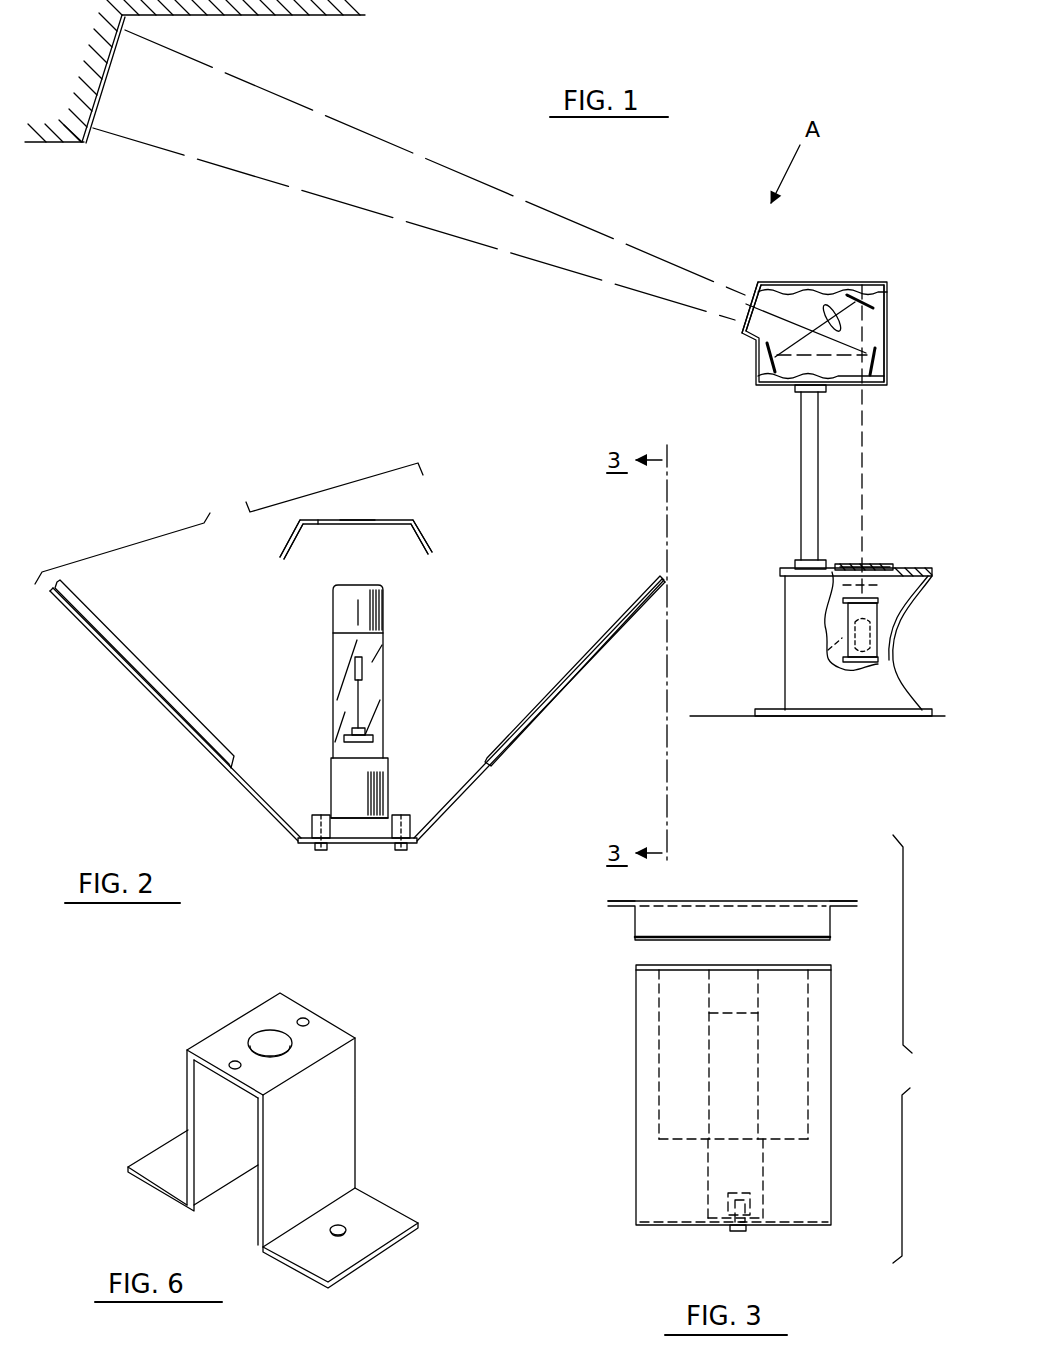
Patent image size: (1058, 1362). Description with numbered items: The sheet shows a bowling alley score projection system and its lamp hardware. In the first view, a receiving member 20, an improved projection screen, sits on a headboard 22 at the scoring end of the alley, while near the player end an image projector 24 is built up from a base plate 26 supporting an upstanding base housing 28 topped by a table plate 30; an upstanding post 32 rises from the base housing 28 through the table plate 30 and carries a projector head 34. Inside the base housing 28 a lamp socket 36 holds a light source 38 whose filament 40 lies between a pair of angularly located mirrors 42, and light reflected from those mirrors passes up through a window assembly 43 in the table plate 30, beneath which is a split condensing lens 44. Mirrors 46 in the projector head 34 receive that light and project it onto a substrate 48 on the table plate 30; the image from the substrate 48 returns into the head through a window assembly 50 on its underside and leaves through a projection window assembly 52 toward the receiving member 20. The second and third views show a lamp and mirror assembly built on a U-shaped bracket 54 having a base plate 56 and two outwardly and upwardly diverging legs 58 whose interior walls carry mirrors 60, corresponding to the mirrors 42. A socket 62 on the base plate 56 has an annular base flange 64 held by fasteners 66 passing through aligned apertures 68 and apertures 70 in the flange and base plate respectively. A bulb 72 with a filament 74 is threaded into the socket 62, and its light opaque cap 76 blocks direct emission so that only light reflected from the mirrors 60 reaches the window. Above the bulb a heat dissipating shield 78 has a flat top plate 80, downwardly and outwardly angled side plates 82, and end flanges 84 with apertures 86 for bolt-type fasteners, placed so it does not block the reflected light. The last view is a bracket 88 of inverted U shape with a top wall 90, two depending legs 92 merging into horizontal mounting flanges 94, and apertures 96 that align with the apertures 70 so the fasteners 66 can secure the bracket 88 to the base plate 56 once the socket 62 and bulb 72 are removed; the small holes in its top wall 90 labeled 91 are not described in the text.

In FIG. 1, the receiving member 20 is at (117, 50).
In FIG. 1, the headboard 22 is at (58, 145).
In FIG. 1, the image projector 24 is at (801, 280).
In FIG. 1, the base plate 26 is at (776, 708).
In FIG. 1, the base housing 28 is at (788, 632).
In FIG. 1, the table plate 30 is at (928, 567).
In FIG. 1, the upstanding post 32 is at (800, 477).
In FIG. 1, the projector head 34 is at (868, 282).
In FIG. 1, the lamp socket 36 is at (858, 668).
In FIG. 1, the light source 38 is at (842, 648).
In FIG. 1, the filament 40 is at (878, 630).
In FIG. 1, the mirrors 42 is at (845, 625).
In FIG. 1, the window assembly 43 is at (852, 565).
In FIG. 1, the split condensing lens 44 is at (880, 585).
In FIG. 1, the mirrors 46 is at (876, 300).
In FIG. 1, the substrate 48 is at (877, 564).
In FIG. 1, the window assembly 50 is at (870, 388).
In FIG. 1, the projection window assembly 52 is at (746, 300).
In FIG. 2, the bracket 54 is at (147, 723).
In FIG. 3, the bracket 54 is at (633, 1060).
In FIG. 2, the base plate 56 is at (352, 845).
In FIG. 3, the base plate 56 is at (640, 1228).
In FIG. 2, the legs 58 is at (255, 796).
In FIG. 3, the legs 58 is at (823, 1130).
In FIG. 2, the mirrors 60 is at (116, 632).
In FIG. 3, the mirrors 60 is at (659, 1020).
In FIG. 2, the socket 62 is at (337, 772).
In FIG. 3, the socket 62 is at (708, 1167).
In FIG. 2, the annular base flange 64 is at (378, 834).
In FIG. 3, the annular base flange 64 is at (770, 1225).
In FIG. 2, the fasteners 66 is at (318, 815).
In FIG. 3, the fasteners 66 is at (743, 1191).
In FIG. 2, the apertures 68 is at (310, 842).
In FIG. 3, the apertures 68 is at (712, 1208).
In FIG. 2, the apertures 70 is at (320, 850).
In FIG. 3, the apertures 70 is at (728, 1229).
In FIG. 2, the bulb 72 is at (335, 651).
In FIG. 3, the bulb 72 is at (760, 1080).
In FIG. 2, the filament 74 is at (362, 700).
In FIG. 2, the light opaque cap 76 is at (372, 608).
In FIG. 2, the heat dissipating shield 78 is at (425, 496).
In FIG. 3, the heat dissipating shield 78 is at (787, 881).
In FIG. 2, the flat top plate 80 is at (318, 520).
In FIG. 2, the side plates 82 is at (283, 545).
In FIG. 3, the side plates 82 is at (713, 920).
In FIG. 2, the flanges 84 is at (374, 526).
In FIG. 3, the flanges 84 is at (858, 902).
In FIG. 3, the apertures 86 is at (613, 910).
In FIG. 6, the bracket 88 is at (277, 1125).
In FIG. 6, the top wall 90 is at (226, 1033).
In FIG. 6, the mounting hole 91 is at (305, 1018).
In FIG. 6, the legs 92 is at (188, 1096).
In FIG. 6, the mounting flanges 94 is at (158, 1156).
In FIG. 6, the apertures 96 is at (335, 1223).